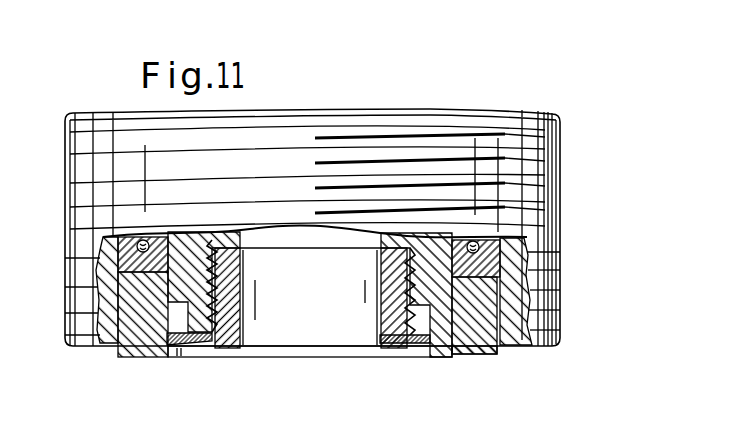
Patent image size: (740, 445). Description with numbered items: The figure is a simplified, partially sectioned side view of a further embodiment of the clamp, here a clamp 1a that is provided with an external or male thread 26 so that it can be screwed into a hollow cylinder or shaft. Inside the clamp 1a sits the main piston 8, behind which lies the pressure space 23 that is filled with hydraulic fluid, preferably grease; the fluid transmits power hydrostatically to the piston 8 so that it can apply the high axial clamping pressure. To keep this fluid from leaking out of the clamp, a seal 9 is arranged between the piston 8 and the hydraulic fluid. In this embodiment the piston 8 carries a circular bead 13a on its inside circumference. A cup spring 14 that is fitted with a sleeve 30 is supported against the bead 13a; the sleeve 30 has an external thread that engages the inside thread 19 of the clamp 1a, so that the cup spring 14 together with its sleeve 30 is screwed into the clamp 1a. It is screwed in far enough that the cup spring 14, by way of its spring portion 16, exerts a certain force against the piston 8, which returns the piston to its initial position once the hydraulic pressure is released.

The clamp 1a is at (545, 179).
The external thread 26 is at (565, 145).
The pressure space 23 is at (485, 237).
The seal 9 is at (527, 261).
The piston 8 is at (484, 322).
The inside thread 19 is at (373, 237).
The sleeve 30 is at (388, 290).
The cup spring 14 is at (380, 356).
The spring portion 16 is at (421, 344).
The circular bead 13a is at (465, 360).